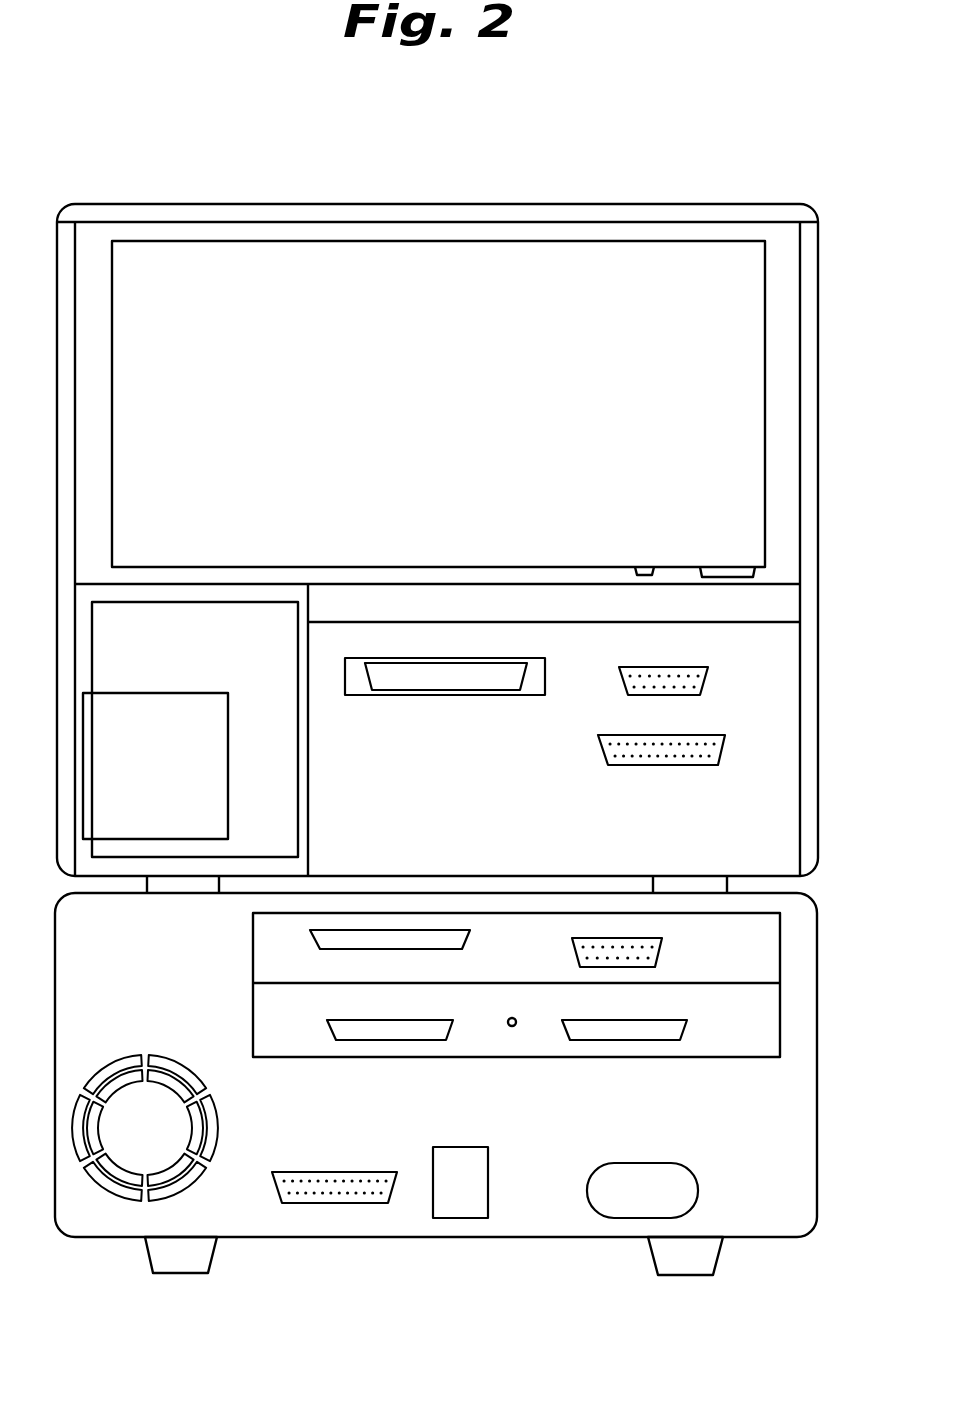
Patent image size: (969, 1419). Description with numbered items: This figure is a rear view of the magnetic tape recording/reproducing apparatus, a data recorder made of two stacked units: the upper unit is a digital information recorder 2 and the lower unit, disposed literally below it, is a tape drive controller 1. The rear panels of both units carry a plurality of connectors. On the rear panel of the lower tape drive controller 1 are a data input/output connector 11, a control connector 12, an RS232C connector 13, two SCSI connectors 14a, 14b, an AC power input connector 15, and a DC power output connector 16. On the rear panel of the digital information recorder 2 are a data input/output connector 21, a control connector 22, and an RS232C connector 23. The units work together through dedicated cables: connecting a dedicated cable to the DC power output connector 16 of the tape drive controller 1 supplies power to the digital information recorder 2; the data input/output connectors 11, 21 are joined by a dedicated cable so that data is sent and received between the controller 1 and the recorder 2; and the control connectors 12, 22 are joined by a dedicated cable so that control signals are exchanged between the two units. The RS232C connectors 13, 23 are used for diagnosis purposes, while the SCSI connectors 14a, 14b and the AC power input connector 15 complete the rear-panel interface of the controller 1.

The tape drive controller 1 is at (235, 1237).
The digital information recorder 2 is at (412, 204).
The data input/output connector 11 is at (310, 938).
The control connector 12 is at (662, 952).
The RS232C connector 13 is at (340, 1203).
The SCSI connector 14a is at (330, 1030).
The SCSI connector 14b is at (687, 1030).
The AC power input connector 15 is at (620, 1218).
The DC power output connector 16 is at (462, 1218).
The data input/output connector 21 is at (361, 688).
The control connector 22 is at (709, 680).
The RS232C connector 23 is at (716, 766).